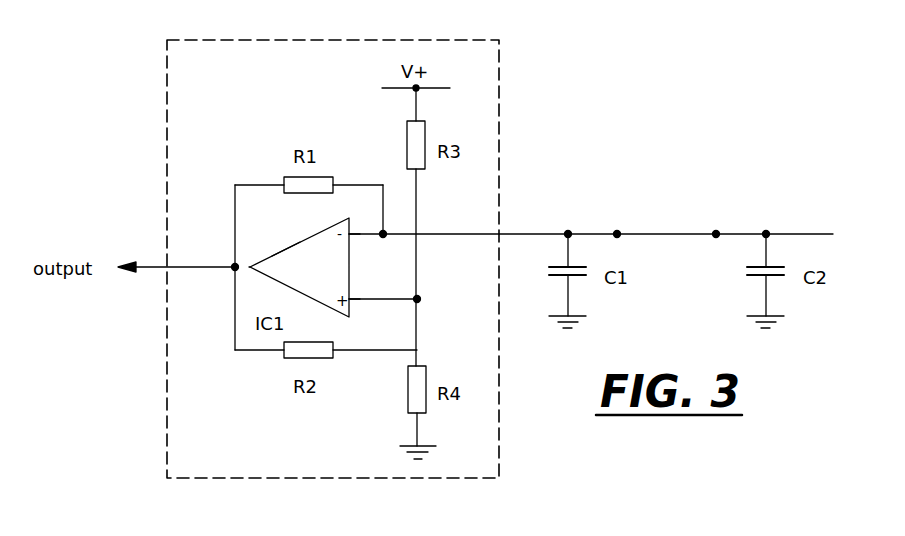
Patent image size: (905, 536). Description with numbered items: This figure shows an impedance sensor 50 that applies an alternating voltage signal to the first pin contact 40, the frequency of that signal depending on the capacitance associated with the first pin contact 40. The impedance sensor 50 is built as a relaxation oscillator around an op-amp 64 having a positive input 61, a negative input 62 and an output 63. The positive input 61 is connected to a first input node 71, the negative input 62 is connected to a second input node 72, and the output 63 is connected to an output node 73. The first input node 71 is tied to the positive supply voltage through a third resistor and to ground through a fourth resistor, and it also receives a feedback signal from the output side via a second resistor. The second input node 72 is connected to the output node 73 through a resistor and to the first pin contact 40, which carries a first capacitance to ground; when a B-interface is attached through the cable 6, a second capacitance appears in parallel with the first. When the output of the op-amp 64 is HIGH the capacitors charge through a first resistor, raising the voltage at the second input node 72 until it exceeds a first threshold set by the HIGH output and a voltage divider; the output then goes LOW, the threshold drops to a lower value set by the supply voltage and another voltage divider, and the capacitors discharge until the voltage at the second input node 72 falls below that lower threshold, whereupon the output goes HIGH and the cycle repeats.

The impedance sensor 50 is at (165, 106).
The output node 73 is at (234, 266).
The output 63 is at (250, 263).
The op-amp 64 is at (297, 256).
The second input node 72 is at (385, 232).
The −ve input 62 is at (352, 236).
The +ve input 61 is at (352, 301).
The first input node 71 is at (420, 299).
The first pin contact 40 is at (618, 232).
The cable 6 is at (686, 232).